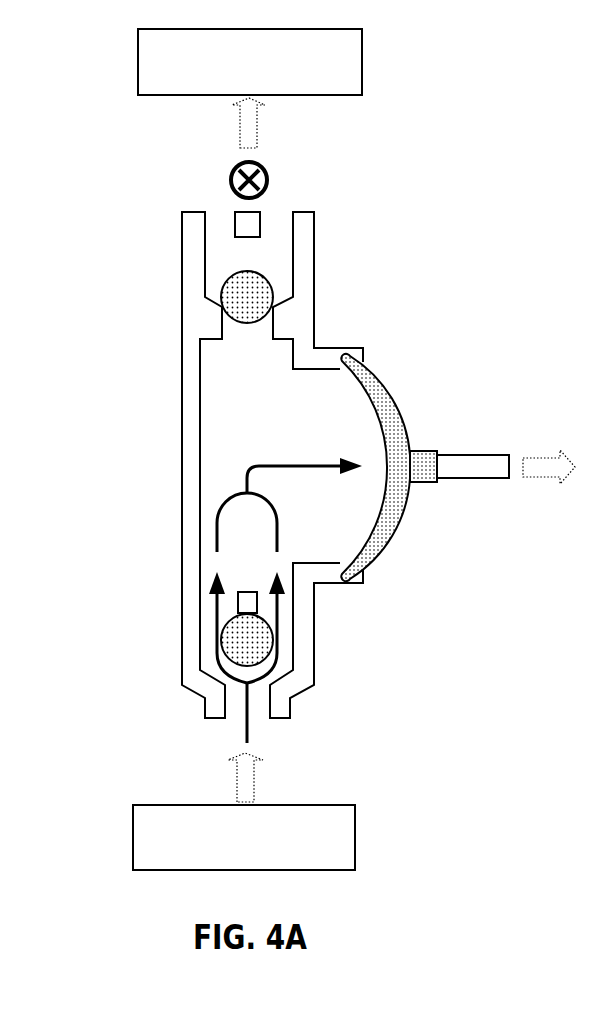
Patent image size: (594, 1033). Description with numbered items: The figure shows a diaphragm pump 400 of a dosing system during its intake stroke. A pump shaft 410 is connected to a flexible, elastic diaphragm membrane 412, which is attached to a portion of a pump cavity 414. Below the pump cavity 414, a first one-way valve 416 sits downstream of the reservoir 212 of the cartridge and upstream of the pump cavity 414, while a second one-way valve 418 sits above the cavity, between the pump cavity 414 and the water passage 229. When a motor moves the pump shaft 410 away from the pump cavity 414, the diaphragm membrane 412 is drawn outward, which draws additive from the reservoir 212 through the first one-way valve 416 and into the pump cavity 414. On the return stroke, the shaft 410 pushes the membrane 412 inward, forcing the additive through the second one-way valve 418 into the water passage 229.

The diaphragm pump 400 is at (110, 119).
The pump shaft 410 is at (498, 479).
The diaphragm membrane 412 is at (397, 527).
The pump cavity 414 is at (228, 416).
The first one-way valve 416 is at (151, 646).
The second one-way valve 418 is at (150, 275).
The water passage 229 is at (232, 86).
The reservoir 212 is at (226, 862).